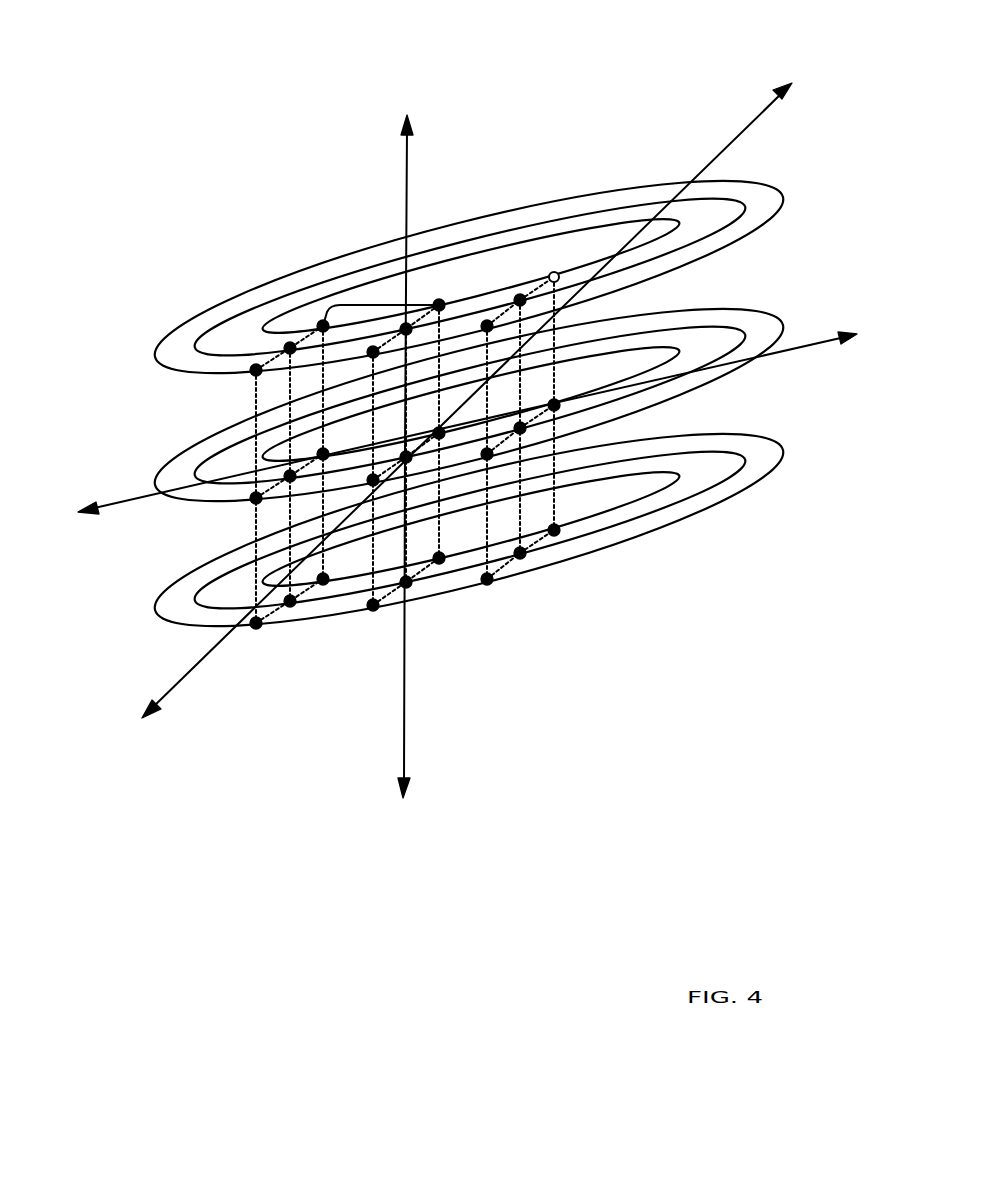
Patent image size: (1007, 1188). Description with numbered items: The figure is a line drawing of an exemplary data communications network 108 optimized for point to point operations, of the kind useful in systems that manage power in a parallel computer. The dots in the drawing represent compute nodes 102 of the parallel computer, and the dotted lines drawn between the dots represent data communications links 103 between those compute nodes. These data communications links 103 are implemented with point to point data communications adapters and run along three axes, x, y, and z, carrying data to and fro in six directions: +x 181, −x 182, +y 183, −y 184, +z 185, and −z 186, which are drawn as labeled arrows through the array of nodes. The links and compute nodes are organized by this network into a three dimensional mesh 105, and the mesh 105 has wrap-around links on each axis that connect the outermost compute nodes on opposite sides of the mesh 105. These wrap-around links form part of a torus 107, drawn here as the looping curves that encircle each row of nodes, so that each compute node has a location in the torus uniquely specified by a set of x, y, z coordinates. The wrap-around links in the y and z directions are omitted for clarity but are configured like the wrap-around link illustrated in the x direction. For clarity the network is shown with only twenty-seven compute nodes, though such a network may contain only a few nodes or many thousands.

The compute nodes 102 is at (487, 582).
The data communications links 103 is at (256, 394).
The three dimensional mesh 105 is at (439, 266).
The torus 107 is at (236, 272).
The data communications network 108 is at (452, 589).
The +x direction 181 is at (863, 359).
The −x direction 182 is at (44, 551).
The +y direction 183 is at (806, 106).
The −y direction 184 is at (107, 763).
The +z direction 185 is at (394, 106).
The −z direction 186 is at (392, 857).